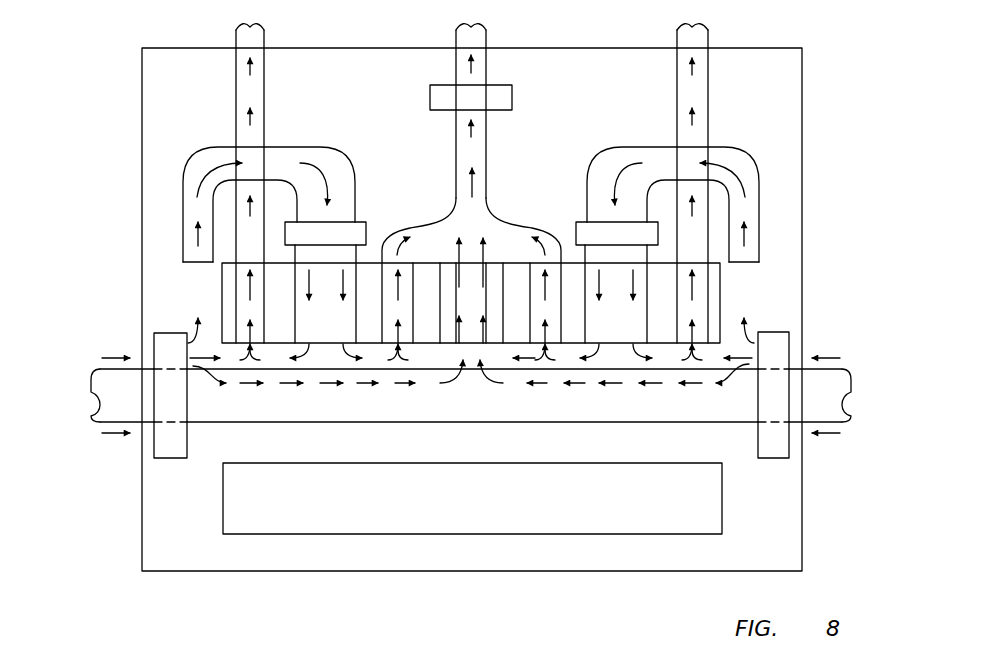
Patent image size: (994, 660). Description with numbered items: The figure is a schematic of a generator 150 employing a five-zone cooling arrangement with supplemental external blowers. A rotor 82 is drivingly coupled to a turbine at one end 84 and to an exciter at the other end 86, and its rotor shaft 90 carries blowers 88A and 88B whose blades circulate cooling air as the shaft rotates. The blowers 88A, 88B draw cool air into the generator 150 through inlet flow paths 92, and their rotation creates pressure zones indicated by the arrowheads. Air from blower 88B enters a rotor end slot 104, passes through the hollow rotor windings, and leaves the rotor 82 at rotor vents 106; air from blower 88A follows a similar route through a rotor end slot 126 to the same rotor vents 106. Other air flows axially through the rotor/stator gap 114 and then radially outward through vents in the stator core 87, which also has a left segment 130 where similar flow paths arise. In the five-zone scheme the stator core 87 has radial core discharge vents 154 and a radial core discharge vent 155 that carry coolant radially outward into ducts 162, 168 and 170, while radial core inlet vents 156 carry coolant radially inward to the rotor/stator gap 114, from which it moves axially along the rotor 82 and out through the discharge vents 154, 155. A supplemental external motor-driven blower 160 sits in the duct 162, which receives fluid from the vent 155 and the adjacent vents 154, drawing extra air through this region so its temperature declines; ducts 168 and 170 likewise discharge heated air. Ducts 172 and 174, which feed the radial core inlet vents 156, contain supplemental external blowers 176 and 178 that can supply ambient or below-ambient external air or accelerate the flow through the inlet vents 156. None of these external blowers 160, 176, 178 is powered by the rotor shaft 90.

The rotor 82 is at (745, 422).
The end 84 is at (850, 402).
The end 86 is at (93, 420).
The stator core 87 is at (222, 297).
The blower 88A is at (170, 460).
The blower 88B is at (773, 458).
The rotor shaft 90 is at (380, 410).
The inlet flow paths 92 is at (108, 358).
The rotor end slot 104 is at (752, 372).
The rotor vents 106 is at (473, 373).
The rotor/stator gap 114 is at (512, 362).
The rotor end slot 126 is at (193, 378).
The left segment 130 is at (332, 537).
The generator 150 is at (163, 602).
The radial core discharge vents 154 is at (240, 287).
The radial core discharge vent 155 is at (467, 287).
The radial core inlet vents 156 is at (327, 280).
The supplemental external motor-driven blower 160 is at (430, 97).
The duct 162 is at (456, 128).
The duct 168 is at (236, 100).
The duct 170 is at (677, 85).
The duct 172 is at (280, 145).
The duct 174 is at (663, 147).
The supplemental external motor-driven blower 176 is at (285, 233).
The supplemental external motor-driven blower 178 is at (658, 232).